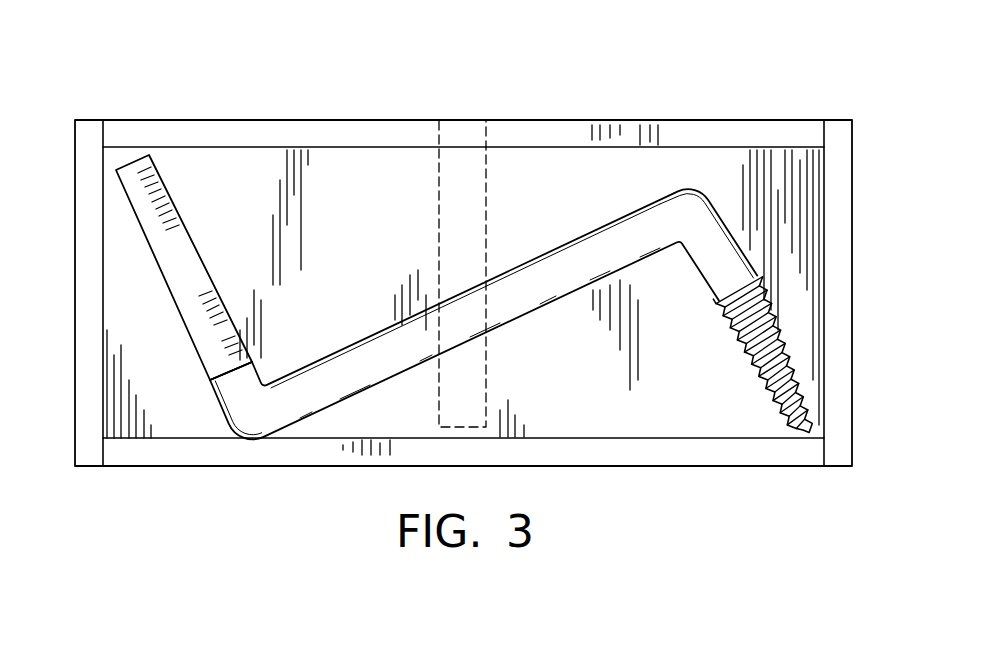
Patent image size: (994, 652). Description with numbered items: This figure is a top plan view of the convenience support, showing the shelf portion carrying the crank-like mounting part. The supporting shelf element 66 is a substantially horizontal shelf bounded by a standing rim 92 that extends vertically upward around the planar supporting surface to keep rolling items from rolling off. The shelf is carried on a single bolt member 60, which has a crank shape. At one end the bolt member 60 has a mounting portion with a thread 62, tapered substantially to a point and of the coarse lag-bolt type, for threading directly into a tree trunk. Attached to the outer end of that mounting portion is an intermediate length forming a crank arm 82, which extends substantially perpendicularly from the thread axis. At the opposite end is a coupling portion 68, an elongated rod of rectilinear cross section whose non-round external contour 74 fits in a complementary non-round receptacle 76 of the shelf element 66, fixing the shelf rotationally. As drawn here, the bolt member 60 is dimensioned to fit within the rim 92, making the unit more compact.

The supporting shelf element 66 is at (853, 153).
The standing rim 92 is at (131, 130).
The complementary receptacle 76 is at (487, 190).
The bolt member 60 is at (400, 343).
The crank arm 82 is at (556, 285).
The thread 62 is at (716, 212).
The coupling portion 68 is at (203, 352).
The external contour 74 is at (193, 340).